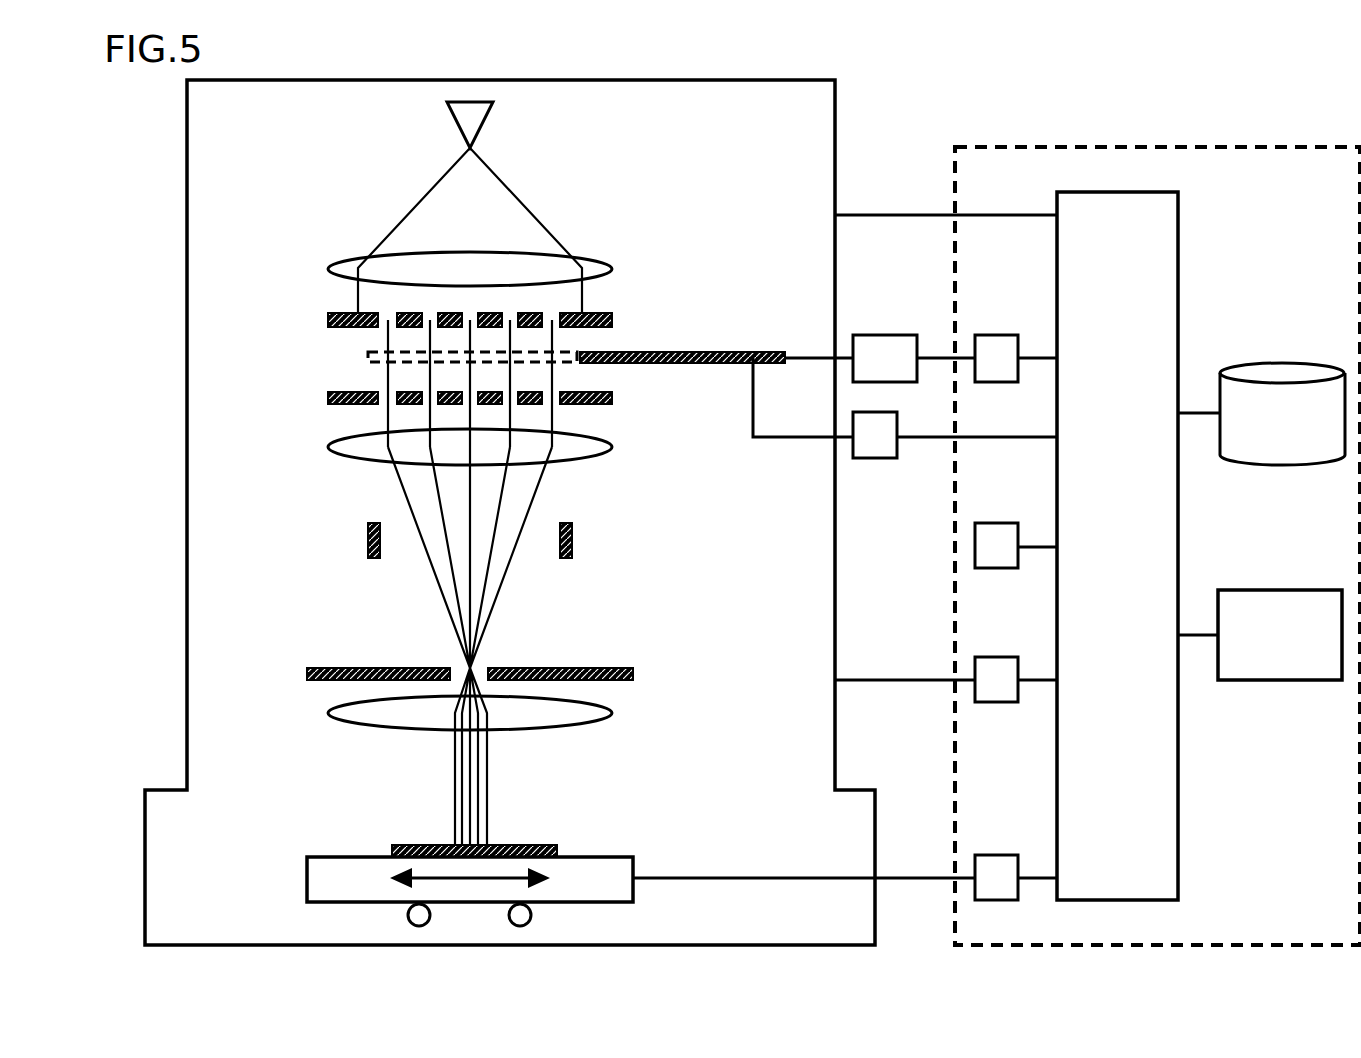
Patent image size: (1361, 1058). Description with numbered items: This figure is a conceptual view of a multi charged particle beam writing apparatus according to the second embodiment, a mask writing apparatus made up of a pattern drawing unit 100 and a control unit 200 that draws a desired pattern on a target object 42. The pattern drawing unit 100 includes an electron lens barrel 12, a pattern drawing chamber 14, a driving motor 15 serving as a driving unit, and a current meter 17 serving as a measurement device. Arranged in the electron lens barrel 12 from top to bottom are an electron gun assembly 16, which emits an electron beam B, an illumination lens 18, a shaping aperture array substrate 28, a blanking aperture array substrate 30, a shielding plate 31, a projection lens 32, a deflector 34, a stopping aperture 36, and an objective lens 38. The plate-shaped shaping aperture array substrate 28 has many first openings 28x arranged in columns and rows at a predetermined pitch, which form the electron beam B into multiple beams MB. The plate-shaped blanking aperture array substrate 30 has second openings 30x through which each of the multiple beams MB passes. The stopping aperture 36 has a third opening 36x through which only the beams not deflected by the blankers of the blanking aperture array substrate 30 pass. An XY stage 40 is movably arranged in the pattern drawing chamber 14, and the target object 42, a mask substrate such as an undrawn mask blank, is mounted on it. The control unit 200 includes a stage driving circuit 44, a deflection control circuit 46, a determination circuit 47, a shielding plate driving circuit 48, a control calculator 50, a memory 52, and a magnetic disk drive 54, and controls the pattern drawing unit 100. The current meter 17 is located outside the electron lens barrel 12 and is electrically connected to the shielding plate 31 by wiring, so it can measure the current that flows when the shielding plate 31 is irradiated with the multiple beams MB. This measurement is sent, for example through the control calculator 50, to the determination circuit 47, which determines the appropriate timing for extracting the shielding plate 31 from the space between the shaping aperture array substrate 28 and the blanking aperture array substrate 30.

The electron lens barrel 12 is at (836, 296).
The pattern drawing chamber 14 is at (878, 812).
The driving motor 15 is at (886, 335).
The electron gun assembly 16 is at (484, 124).
The current meter 17 is at (873, 458).
The illumination lens 18 is at (344, 266).
The shaping aperture array substrate 28 is at (328, 320).
The first openings 28x is at (467, 318).
The blanking aperture array substrate 30 is at (328, 398).
The second openings 30x is at (557, 403).
The shielding plate 31 is at (730, 346).
The projection lens 32 is at (330, 446).
The deflector 34 is at (572, 540).
The stopping aperture 36 is at (310, 668).
The third opening 36x is at (478, 668).
The objective lens 38 is at (328, 712).
The XY stage 40 is at (307, 878).
The target object 42 is at (543, 845).
The stage driving circuit 44 is at (1000, 854).
The deflection control circuit 46 is at (1000, 656).
The determination circuit 47 is at (1000, 522).
The shielding plate driving circuit 48 is at (992, 334).
The control calculator 50 is at (1178, 236).
The memory 52 is at (1280, 590).
The magnetic disk drive 54 is at (1280, 362).
The pattern drawing unit 100 is at (868, 164).
The control unit 200 is at (1300, 128).
The electron beam B is at (528, 210).
The multiple beams MB is at (560, 494).